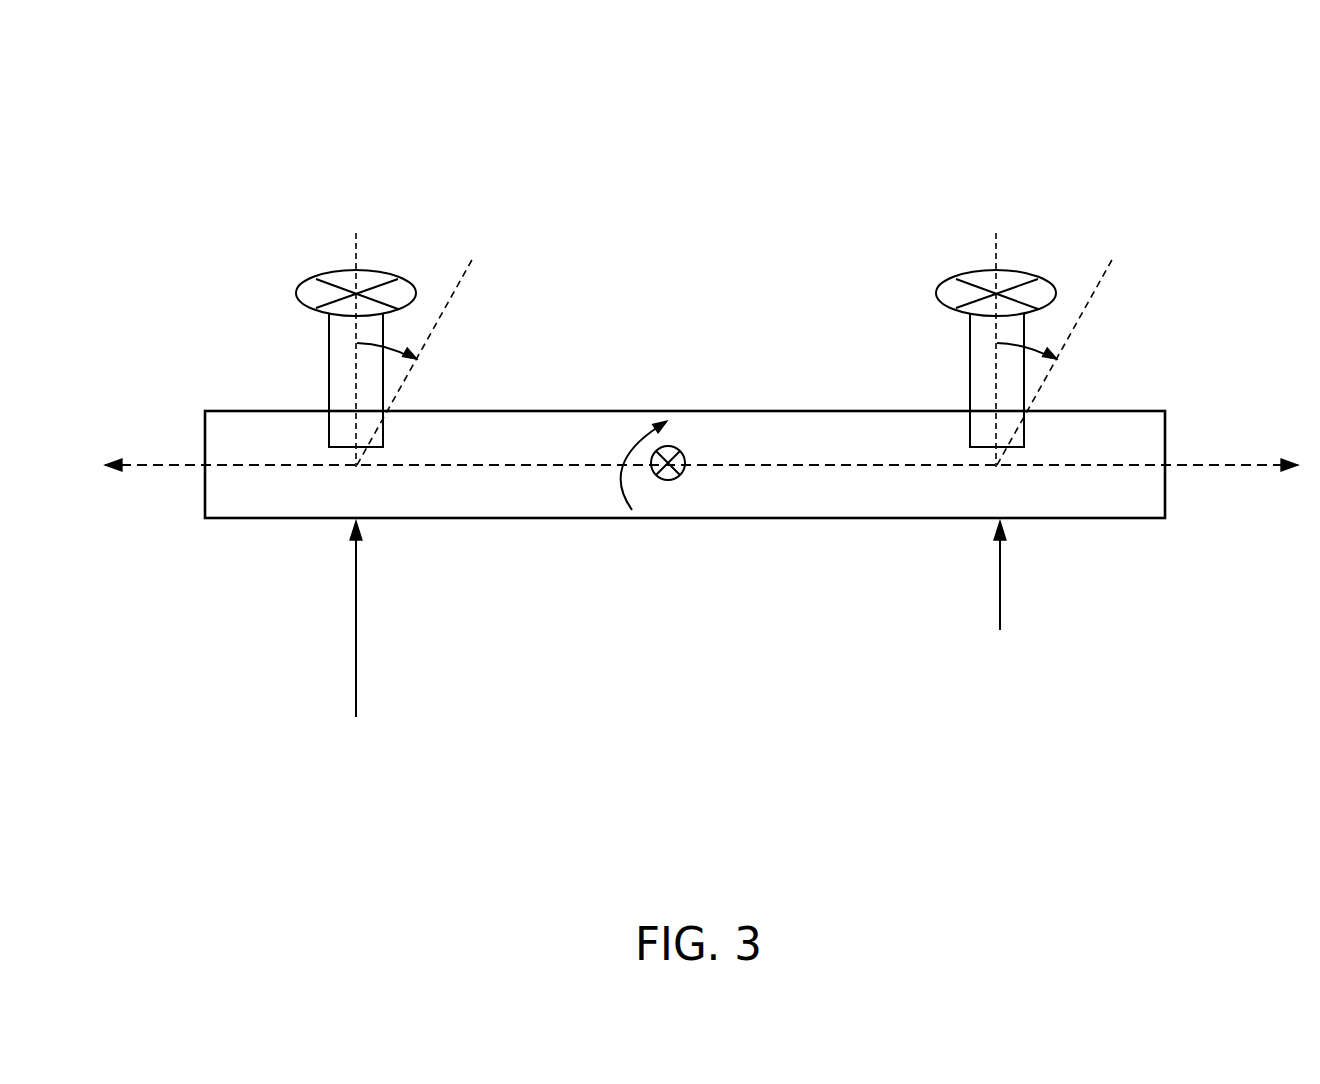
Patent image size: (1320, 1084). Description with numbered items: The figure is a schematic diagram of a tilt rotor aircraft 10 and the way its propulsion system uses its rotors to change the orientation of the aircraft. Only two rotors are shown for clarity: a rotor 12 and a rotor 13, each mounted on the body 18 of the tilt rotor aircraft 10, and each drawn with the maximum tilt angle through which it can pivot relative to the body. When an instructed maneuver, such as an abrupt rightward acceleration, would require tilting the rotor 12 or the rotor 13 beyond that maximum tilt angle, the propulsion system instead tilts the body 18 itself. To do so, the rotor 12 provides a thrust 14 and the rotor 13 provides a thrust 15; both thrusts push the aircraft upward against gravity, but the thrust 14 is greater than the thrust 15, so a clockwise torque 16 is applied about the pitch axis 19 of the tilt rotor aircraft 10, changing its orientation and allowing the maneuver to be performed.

The tilt rotor aircraft 10 is at (1135, 85).
The rotor 12 is at (407, 243).
The rotor 13 is at (1027, 243).
The thrust 14 is at (356, 568).
The thrust 15 is at (1000, 568).
The torque 16 is at (622, 473).
The body 18 is at (463, 505).
The pitch axis 19 is at (680, 477).